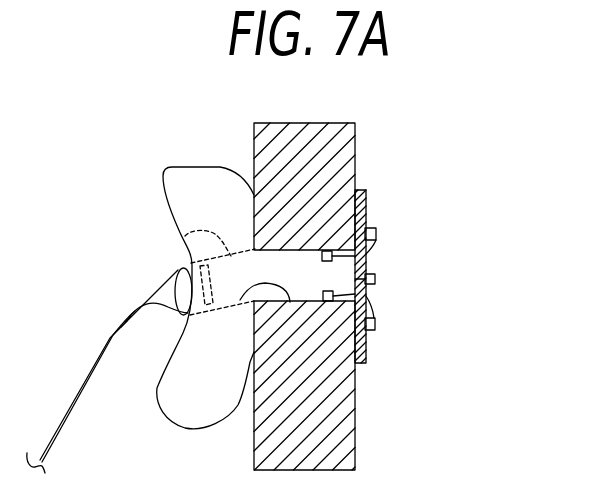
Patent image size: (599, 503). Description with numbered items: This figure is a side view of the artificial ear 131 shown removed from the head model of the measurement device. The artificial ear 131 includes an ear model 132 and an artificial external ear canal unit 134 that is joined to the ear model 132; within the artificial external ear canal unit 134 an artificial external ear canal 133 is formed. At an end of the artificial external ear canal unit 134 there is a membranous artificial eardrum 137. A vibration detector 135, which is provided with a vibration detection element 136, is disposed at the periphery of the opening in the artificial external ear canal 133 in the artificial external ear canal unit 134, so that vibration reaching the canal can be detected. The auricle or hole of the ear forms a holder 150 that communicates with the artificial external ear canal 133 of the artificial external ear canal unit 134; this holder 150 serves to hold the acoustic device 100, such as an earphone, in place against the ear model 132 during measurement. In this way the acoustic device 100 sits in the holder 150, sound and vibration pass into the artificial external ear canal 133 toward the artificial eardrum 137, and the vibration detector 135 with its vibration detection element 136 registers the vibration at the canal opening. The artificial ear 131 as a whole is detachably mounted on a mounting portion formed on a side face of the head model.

The acoustic device 100 is at (144, 276).
The artificial ear 131 is at (360, 280).
The ear model 132 is at (167, 178).
The artificial external ear canal 133 is at (240, 300).
The artificial external ear canal unit 134 is at (340, 408).
The vibration detector 135 is at (408, 286).
The vibration detection element 136 is at (376, 234).
The artificial eardrum 137 is at (366, 198).
The holder 150 is at (182, 236).